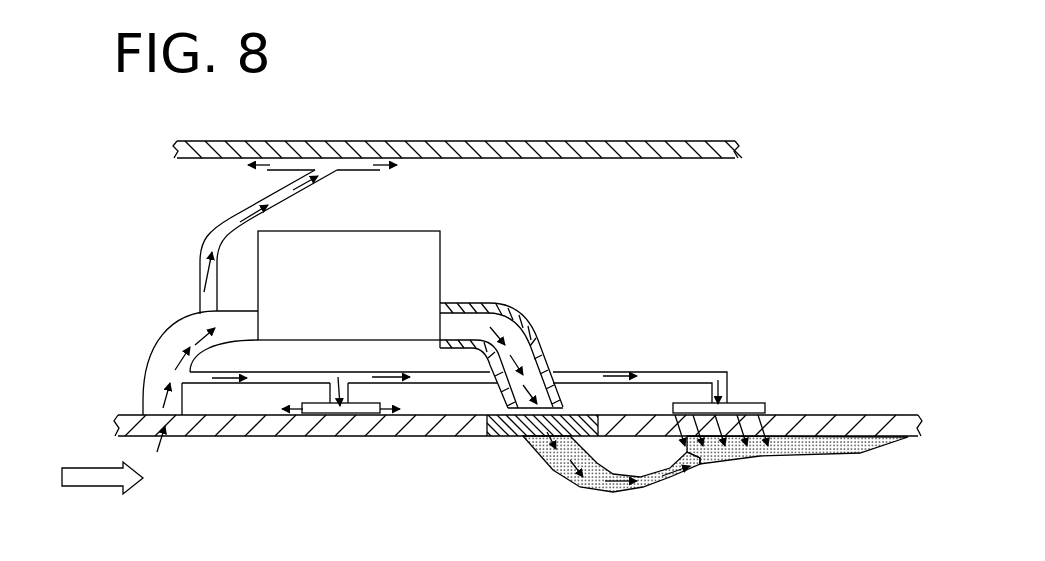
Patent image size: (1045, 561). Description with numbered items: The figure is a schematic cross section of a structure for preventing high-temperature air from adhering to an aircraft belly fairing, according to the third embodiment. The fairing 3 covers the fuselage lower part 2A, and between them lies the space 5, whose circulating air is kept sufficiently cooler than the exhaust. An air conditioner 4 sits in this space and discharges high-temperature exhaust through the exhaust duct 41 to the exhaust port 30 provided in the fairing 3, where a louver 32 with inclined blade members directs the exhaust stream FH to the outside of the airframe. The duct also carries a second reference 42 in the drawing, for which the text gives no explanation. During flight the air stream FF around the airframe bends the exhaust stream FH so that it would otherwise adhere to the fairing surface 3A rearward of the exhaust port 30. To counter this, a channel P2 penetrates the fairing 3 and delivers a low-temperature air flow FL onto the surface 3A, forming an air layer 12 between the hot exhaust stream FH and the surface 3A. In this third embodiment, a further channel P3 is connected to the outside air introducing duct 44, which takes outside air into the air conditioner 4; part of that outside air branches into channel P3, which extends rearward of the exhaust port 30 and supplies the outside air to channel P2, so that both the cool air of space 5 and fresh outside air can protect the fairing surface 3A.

The lower part of the fuselage 2A is at (688, 158).
The air conditioner 4 is at (425, 231).
The outside air introducing duct 44 is at (145, 370).
The space 5 is at (704, 278).
The exhaust duct 41 is at (465, 303).
The heated-air duct 42 is at (501, 312).
The exhaust stream FH is at (523, 362).
The low-temperature air flow FL is at (770, 433).
The channel P3 is at (263, 386).
The channel P2 is at (737, 402).
The air layer 12 is at (823, 440).
The fairing 3 is at (195, 437).
The exhaust port 30 is at (497, 437).
The louver 32 is at (513, 437).
The surface of the fairing 3A is at (913, 440).
The air stream FF is at (87, 478).